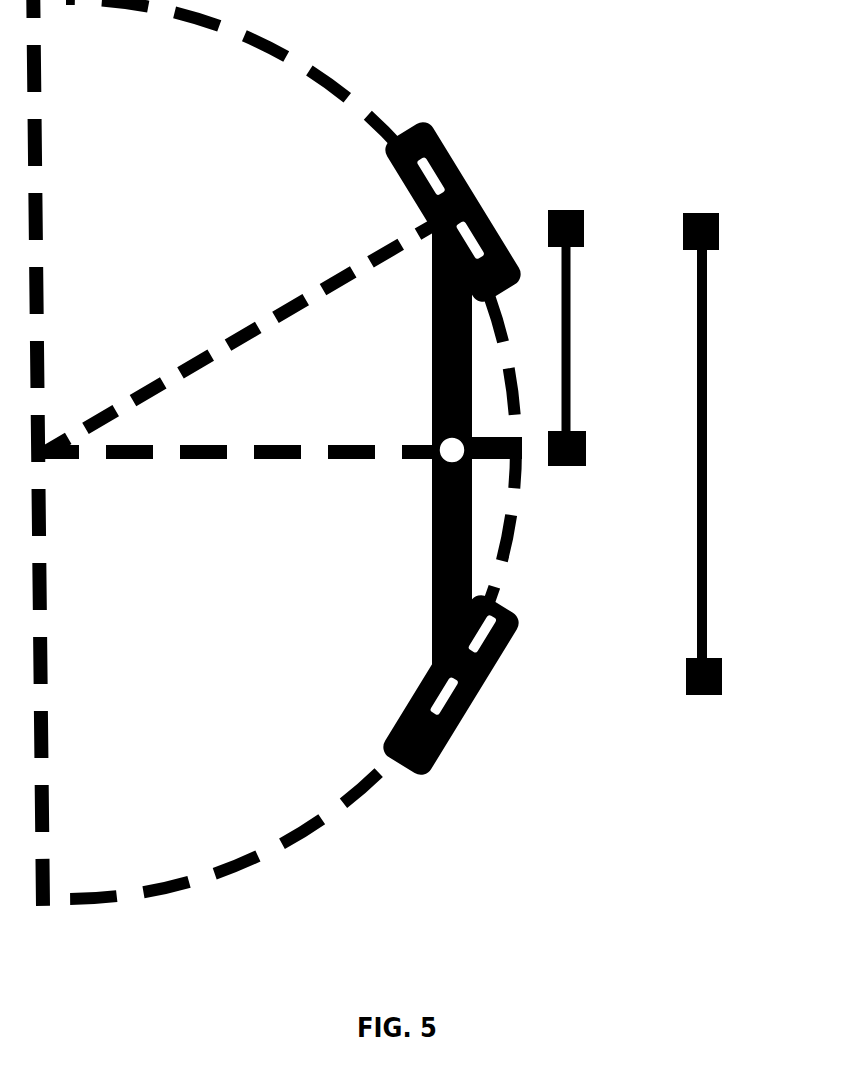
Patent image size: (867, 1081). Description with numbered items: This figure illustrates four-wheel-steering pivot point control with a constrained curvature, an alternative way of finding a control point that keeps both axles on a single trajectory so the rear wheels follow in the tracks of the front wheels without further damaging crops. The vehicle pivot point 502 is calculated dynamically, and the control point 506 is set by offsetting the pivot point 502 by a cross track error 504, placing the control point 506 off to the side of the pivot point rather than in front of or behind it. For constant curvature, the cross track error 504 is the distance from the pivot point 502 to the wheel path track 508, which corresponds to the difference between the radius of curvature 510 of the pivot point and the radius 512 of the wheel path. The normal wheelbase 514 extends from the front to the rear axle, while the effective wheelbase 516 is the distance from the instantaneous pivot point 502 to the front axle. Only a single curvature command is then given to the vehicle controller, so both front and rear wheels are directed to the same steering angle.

The vehicle pivot point 502 is at (438, 452).
The cross track error (XTE) 504 is at (493, 459).
The control point 506 is at (520, 455).
The wheel path track 508 is at (513, 392).
The radius of curvature R_V of the pivot point 510 is at (143, 458).
The radius R_PATH of the wheel path 512 is at (193, 366).
The normal wheelbase 514 is at (703, 348).
The effective wheelbase 516 is at (568, 287).